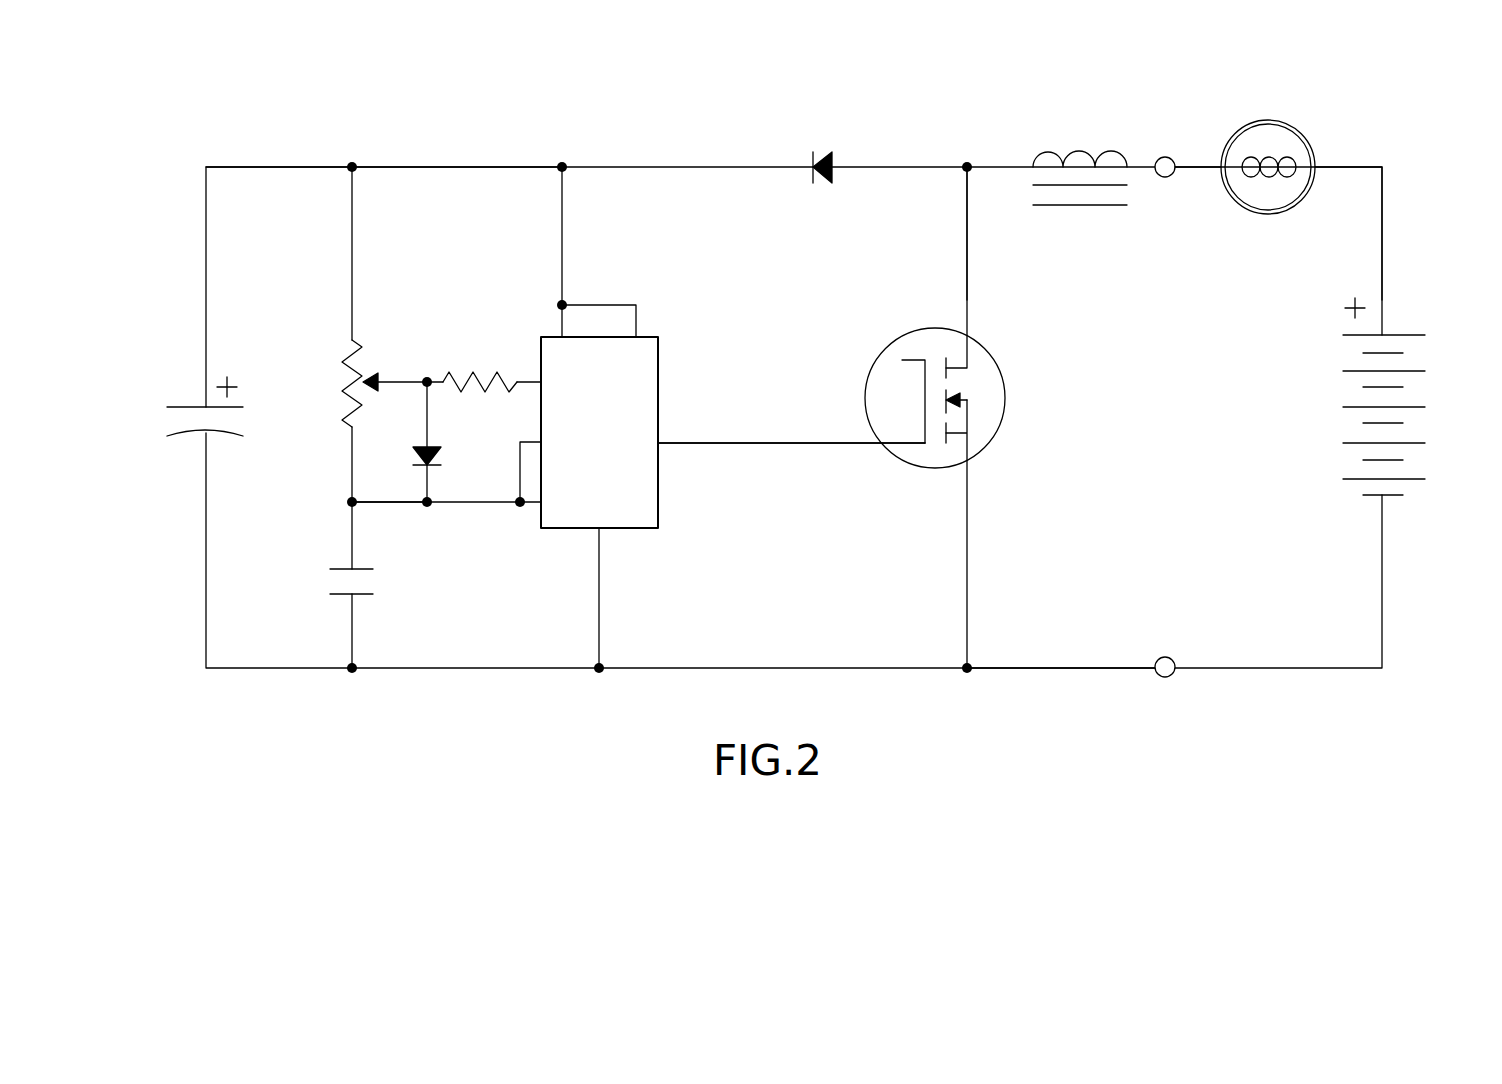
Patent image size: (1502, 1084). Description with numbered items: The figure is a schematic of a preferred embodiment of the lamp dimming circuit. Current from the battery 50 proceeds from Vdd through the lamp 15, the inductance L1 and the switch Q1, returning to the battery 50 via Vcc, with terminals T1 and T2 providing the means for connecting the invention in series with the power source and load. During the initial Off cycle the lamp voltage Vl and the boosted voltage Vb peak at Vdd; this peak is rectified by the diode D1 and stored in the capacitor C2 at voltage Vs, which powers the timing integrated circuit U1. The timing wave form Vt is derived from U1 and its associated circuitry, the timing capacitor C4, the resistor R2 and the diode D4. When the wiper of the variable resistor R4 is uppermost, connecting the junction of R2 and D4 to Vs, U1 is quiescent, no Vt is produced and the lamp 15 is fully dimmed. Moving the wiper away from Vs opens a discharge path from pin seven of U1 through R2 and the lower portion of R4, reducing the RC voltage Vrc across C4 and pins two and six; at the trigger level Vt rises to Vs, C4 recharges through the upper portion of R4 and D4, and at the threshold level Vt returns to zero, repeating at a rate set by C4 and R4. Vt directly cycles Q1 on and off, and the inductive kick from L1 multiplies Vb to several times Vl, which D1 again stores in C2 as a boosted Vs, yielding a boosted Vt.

The capacitor voltage Vs is at (303, 167).
The capacitor C2 is at (172, 418).
The variable resistor R4 is at (348, 346).
The resistor R2 is at (517, 372).
The diode D4 is at (423, 447).
The timing integrated circuit U1 is at (635, 375).
The RC timing voltage Vrc is at (348, 487).
The timing capacitor C4 is at (368, 580).
The timing wave form Vt is at (800, 443).
The rectifier diode D1 is at (828, 158).
The boosted voltage Vb is at (978, 165).
The inductance L1 is at (1083, 150).
The terminal T1 is at (1162, 177).
The lamp voltage Vl is at (1197, 167).
The lamp 15 is at (1278, 142).
The battery supply voltage Vdd is at (1360, 167).
The switch Q1 is at (987, 412).
The battery 50 is at (1348, 462).
The battery return voltage Vcc is at (1035, 667).
The terminal T2 is at (1163, 668).